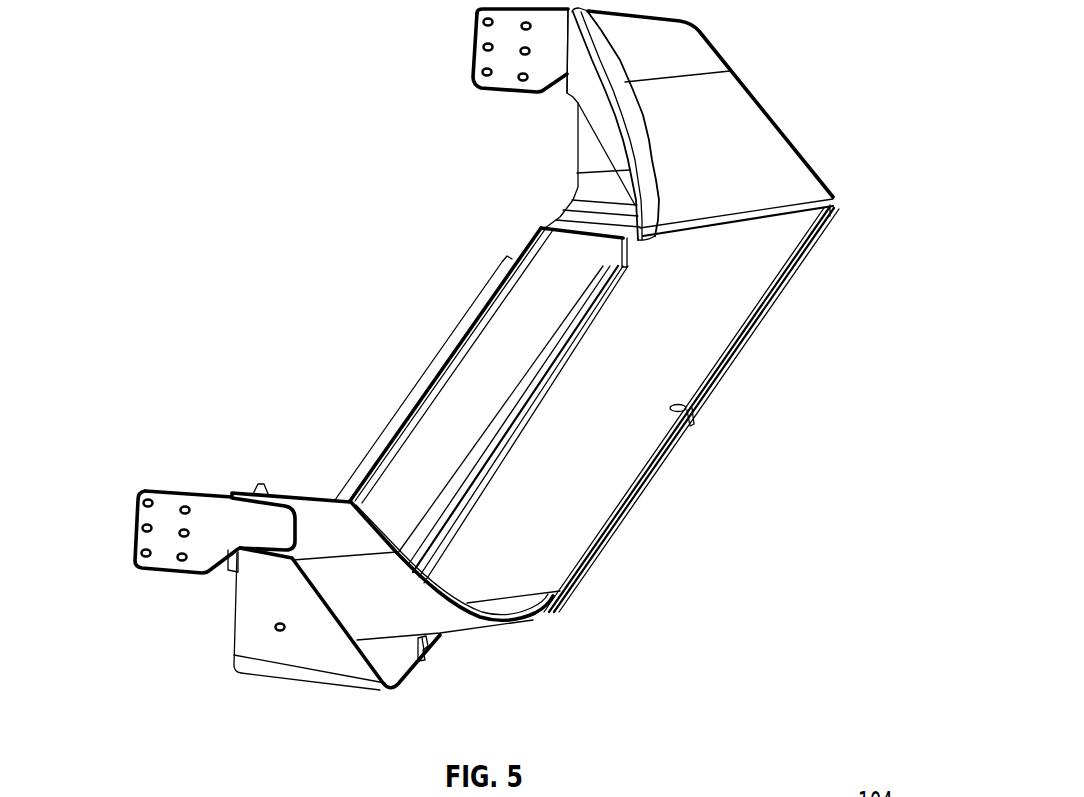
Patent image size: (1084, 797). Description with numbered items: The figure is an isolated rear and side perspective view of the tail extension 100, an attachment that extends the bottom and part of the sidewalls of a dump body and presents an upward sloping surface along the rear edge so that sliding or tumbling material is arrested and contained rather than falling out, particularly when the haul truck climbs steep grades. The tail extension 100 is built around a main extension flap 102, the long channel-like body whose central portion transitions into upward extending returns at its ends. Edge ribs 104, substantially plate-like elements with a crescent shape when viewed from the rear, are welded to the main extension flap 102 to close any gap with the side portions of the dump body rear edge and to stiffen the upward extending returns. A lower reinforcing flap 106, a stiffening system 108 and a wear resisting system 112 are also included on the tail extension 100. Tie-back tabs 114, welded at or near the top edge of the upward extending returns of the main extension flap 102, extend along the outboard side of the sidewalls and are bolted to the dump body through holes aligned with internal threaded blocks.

The tail extension 100 is at (816, 66).
The main extension flap 102 is at (725, 334).
The edge ribs 104 is at (630, 130).
The lower reinforcing flap 106 is at (541, 620).
The stiffening system 108 is at (432, 643).
The wear resisting system 112 is at (458, 412).
The tie-back tabs 114 is at (513, 77).